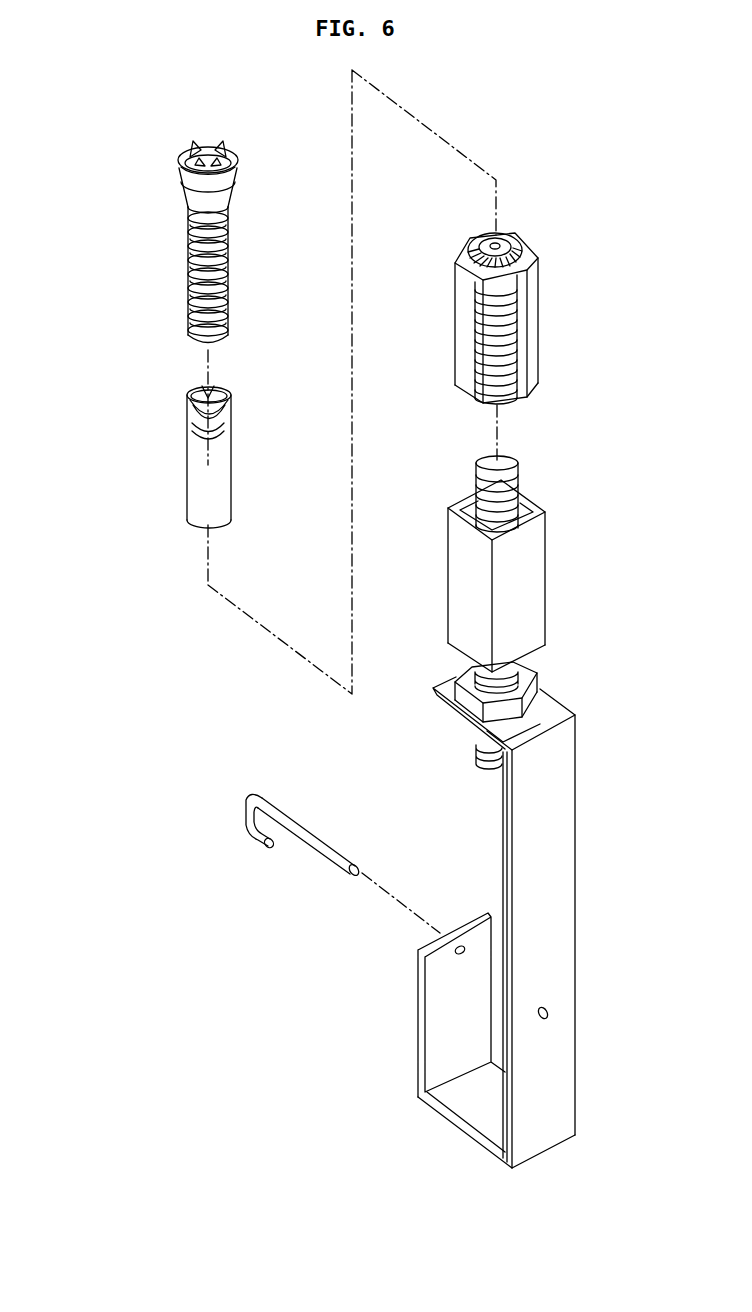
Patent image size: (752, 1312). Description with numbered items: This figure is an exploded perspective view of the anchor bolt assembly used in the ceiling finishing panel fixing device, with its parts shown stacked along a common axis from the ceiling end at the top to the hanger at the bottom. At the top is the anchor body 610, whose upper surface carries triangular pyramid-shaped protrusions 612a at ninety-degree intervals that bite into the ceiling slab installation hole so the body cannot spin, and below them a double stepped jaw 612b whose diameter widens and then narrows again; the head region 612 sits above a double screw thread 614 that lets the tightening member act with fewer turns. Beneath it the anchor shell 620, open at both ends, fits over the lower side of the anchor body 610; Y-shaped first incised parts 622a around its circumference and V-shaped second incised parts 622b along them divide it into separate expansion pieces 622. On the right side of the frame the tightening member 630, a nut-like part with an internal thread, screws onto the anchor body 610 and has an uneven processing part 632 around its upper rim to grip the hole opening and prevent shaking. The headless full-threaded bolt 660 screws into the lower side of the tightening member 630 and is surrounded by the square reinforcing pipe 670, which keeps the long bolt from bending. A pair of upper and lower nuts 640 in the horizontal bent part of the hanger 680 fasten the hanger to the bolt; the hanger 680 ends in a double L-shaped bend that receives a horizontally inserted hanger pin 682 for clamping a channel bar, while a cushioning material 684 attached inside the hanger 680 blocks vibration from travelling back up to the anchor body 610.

The anchor body 610 is at (176, 292).
The screw head 612 is at (207, 126).
The triangular pyramid-shaped protrusions 612a is at (190, 147).
The double stepped jaw 612b is at (236, 166).
The double screw thread 614 is at (188, 256).
The anchor shell 620 is at (178, 453).
The expansion pieces 622 is at (222, 390).
The first incised parts 622a is at (204, 383).
The second incised parts 622b is at (223, 437).
The tightening member 630 is at (540, 305).
The processing part 632 is at (519, 243).
The upper and lower nuts 640 is at (468, 737).
The full-threaded bolt 660 is at (520, 472).
The reinforcing pipe 670 is at (533, 585).
The hanger 680 is at (566, 922).
The hanger pin 682 is at (314, 843).
The cushioning material 684 is at (446, 1014).